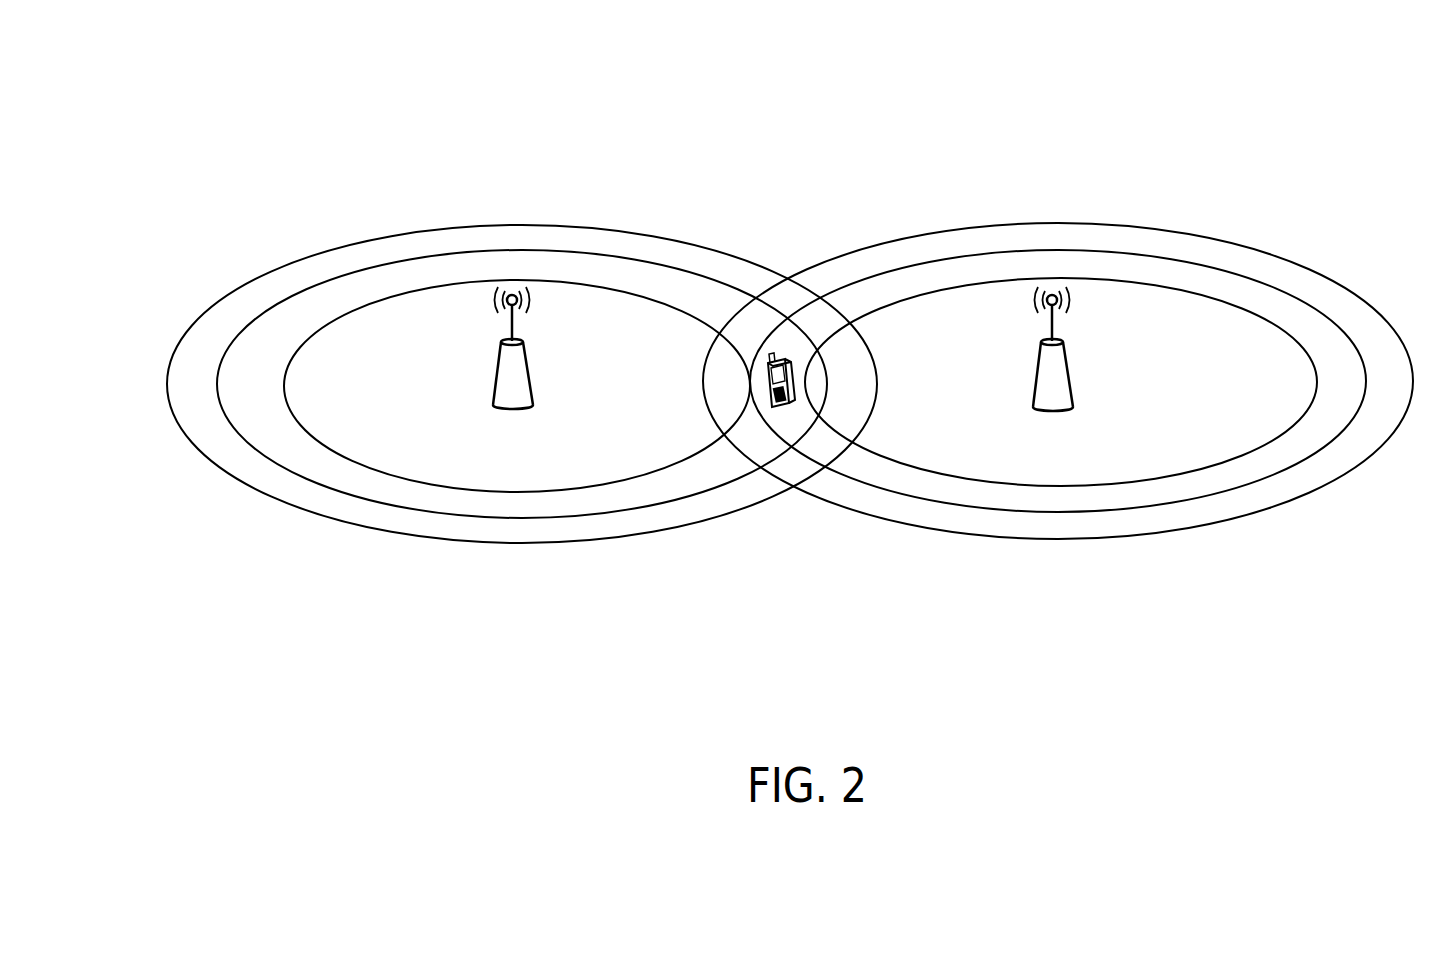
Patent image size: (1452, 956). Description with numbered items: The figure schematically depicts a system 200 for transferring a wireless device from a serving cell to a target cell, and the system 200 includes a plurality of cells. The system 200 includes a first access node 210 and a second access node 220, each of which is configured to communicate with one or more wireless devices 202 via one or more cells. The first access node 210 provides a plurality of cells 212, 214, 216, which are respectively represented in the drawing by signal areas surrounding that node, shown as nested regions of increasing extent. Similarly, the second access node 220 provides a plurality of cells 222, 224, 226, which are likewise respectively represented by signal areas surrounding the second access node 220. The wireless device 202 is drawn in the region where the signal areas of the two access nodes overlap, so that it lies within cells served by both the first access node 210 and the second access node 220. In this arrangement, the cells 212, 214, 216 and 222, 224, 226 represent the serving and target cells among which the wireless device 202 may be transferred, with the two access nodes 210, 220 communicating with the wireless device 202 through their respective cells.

The system 200 is at (1076, 101).
The wireless device 202 is at (760, 376).
The first access node 210 is at (492, 397).
The cell 212 is at (298, 421).
The cell 214 is at (537, 518).
The cell 216 is at (432, 544).
The second access node 220 is at (1040, 389).
The cell 222 is at (1082, 481).
The cell 224 is at (1052, 512).
The cell 226 is at (947, 539).